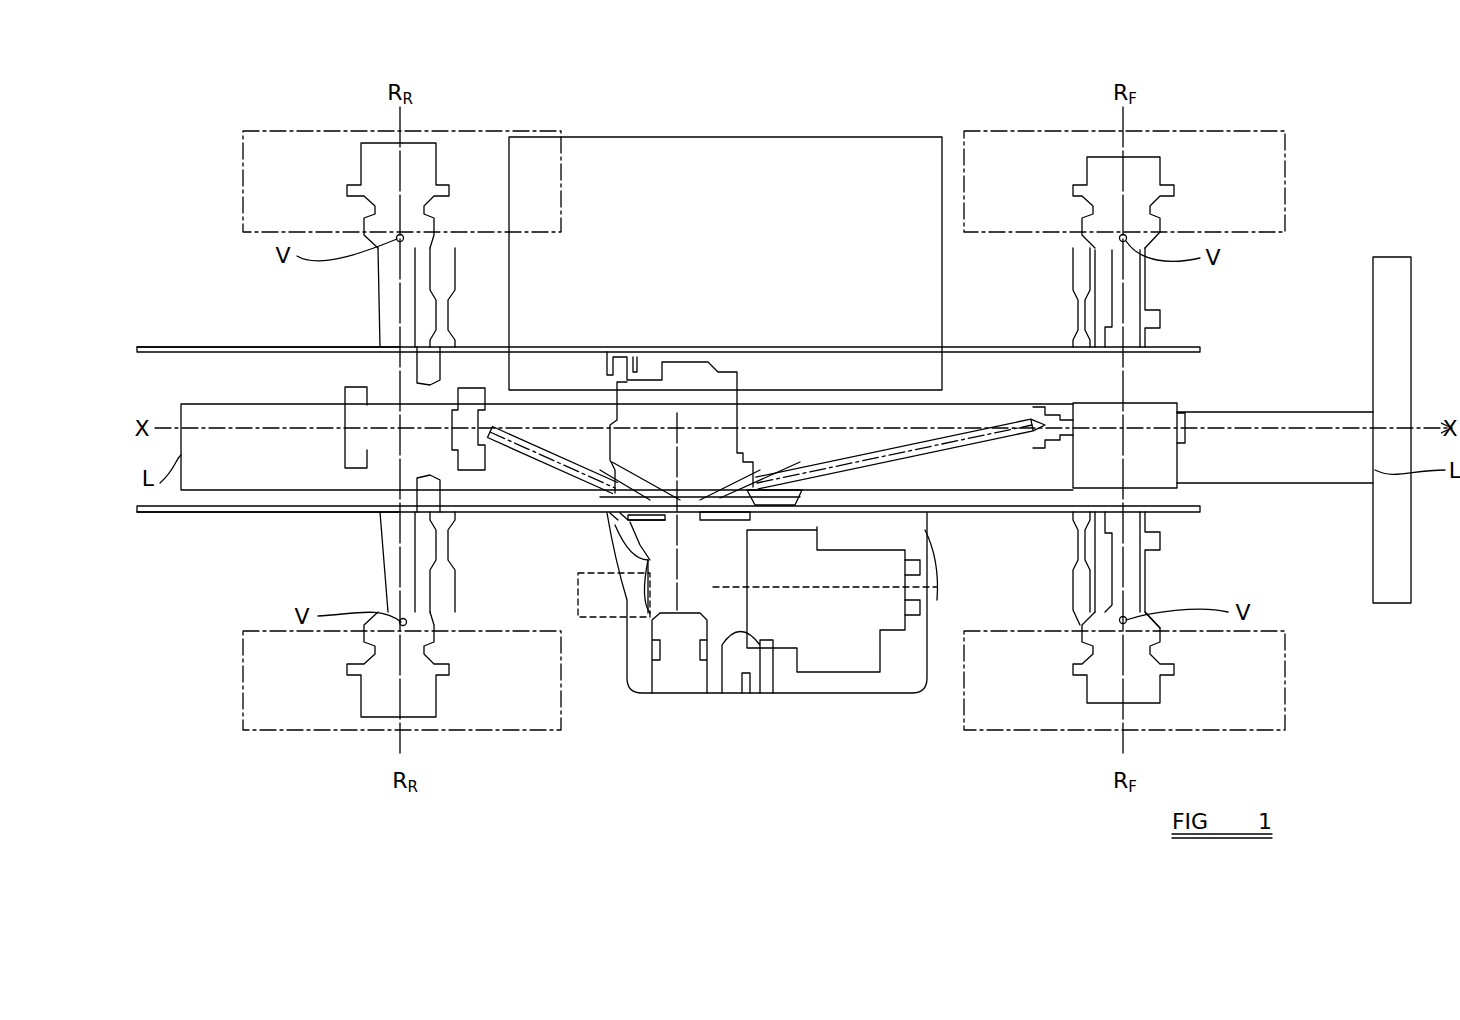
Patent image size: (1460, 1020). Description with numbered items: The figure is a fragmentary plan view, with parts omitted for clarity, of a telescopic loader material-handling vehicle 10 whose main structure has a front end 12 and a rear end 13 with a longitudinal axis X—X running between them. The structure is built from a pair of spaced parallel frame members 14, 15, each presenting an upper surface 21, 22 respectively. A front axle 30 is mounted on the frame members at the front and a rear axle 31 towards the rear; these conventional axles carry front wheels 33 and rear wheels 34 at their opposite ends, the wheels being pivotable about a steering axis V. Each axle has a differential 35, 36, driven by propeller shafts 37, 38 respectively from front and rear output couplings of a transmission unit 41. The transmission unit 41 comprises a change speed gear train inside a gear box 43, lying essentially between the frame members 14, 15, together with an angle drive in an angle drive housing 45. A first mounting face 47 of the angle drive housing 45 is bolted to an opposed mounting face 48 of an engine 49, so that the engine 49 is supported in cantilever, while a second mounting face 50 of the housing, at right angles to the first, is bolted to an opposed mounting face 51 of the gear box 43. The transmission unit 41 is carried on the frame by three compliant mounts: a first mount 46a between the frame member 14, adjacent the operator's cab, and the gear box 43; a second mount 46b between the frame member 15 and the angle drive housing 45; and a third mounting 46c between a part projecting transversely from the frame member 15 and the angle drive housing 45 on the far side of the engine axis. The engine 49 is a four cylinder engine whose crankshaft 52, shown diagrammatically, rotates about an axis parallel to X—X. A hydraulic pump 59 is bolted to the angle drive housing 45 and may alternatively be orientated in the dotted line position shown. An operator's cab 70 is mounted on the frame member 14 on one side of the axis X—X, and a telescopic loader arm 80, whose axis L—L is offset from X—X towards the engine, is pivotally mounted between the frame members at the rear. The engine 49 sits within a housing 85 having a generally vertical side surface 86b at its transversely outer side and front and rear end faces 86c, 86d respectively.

The material-handling vehicle 10 is at (905, 110).
The front end 12 is at (1340, 190).
The rear end 13 is at (180, 157).
The frame member 14 is at (230, 345).
The frame member 15 is at (173, 514).
The upper surface 21 is at (290, 347).
The upper surface 22 is at (235, 512).
The front axle 30 is at (1143, 572).
The rear axle 31 is at (383, 568).
The front wheels 33 is at (1287, 131).
The rear wheels 34 is at (300, 131).
The differential 35 is at (1160, 455).
The differential 36 is at (378, 445).
The propeller shaft 37 is at (905, 455).
The propeller shaft 38 is at (552, 440).
The transmission unit 41 is at (770, 385).
The gear box 43 is at (690, 352).
The angle drive housing 45 is at (650, 695).
The first mount 46a is at (692, 362).
The second mount 46b is at (770, 513).
The third mounting 46c is at (773, 695).
The first mounting face 47 is at (787, 693).
The mounting face 48 is at (700, 695).
The engine 49 is at (848, 693).
The second mounting face 50 is at (640, 545).
The mounting face 51 is at (630, 522).
The crankshaft 52 is at (945, 592).
The hydraulic pump 59 is at (578, 600).
The operator's cab 70 is at (662, 133).
The loader arm 80 is at (1298, 405).
The housing 85 is at (915, 693).
The side surface 86b is at (818, 693).
The front end face 86c is at (940, 615).
The rear end face 86d is at (632, 605).